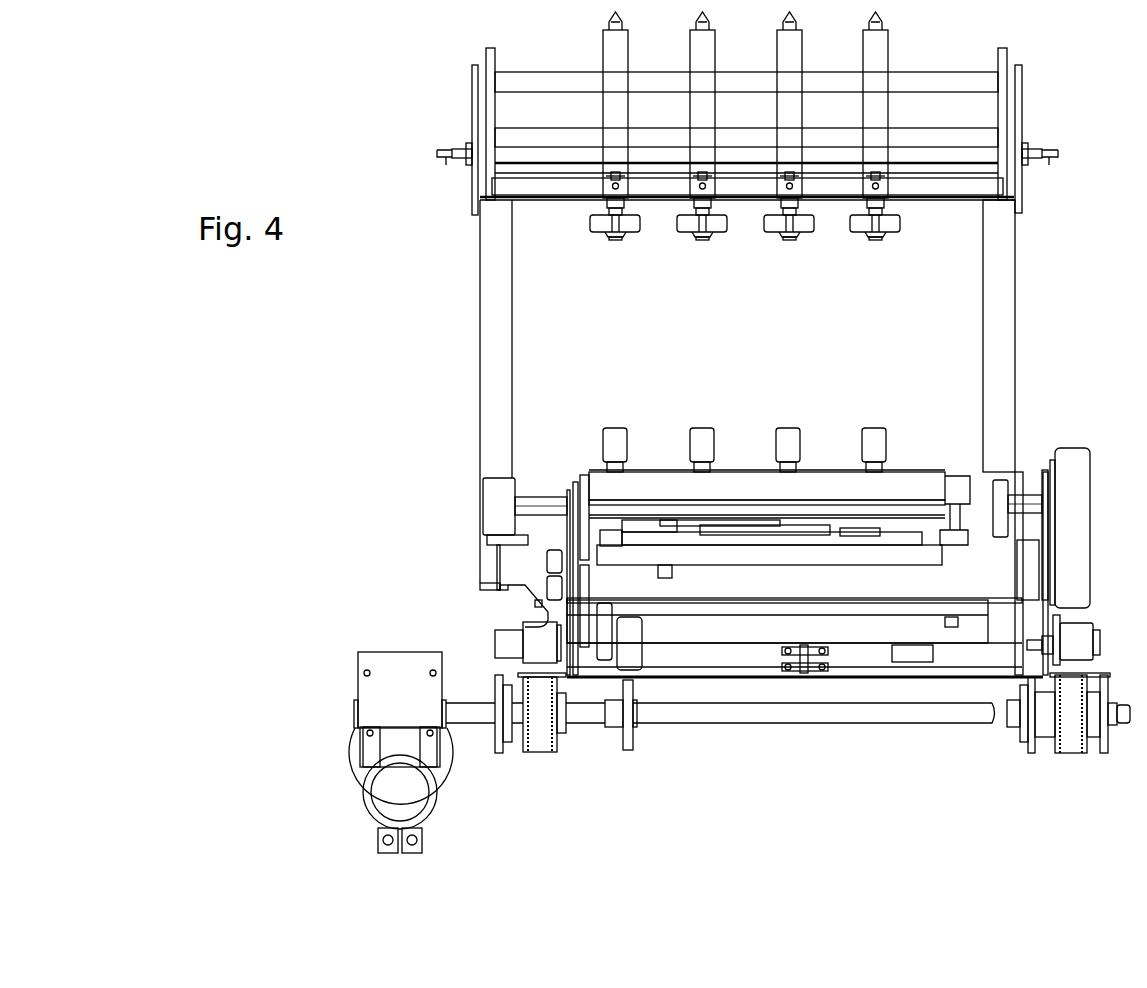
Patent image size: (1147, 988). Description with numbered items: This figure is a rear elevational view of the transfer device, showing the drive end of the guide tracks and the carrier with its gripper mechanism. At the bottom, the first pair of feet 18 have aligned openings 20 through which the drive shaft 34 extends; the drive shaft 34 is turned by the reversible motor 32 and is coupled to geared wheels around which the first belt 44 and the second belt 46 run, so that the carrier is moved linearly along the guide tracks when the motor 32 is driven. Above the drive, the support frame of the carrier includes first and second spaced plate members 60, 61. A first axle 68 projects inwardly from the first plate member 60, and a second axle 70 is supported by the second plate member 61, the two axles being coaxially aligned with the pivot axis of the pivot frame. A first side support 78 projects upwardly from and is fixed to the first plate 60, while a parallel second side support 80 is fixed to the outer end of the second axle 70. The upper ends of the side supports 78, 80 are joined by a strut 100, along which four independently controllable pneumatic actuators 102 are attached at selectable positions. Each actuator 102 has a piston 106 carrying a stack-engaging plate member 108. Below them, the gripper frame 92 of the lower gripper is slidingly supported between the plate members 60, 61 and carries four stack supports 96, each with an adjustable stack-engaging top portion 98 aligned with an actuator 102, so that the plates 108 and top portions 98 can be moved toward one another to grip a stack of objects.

The first pair of feet 18 is at (628, 750).
The aligned openings 20 is at (637, 725).
The motor 32 is at (348, 752).
The drive shaft 34 is at (808, 723).
The first belt 44 is at (1072, 745).
The second belt 46 is at (540, 745).
The first plate member 60 is at (1047, 613).
The second plate member 61 is at (572, 482).
The first axle 68 is at (1025, 505).
The second axle 70 is at (535, 495).
The first side support 78 is at (1008, 326).
The second side support 80 is at (490, 327).
The gripper frame 92 is at (832, 478).
The stack supports 96 is at (632, 470).
The stack-engaging top portion 98 is at (615, 428).
The strut 100 is at (993, 130).
The pneumatic actuators 102 is at (707, 47).
The piston 106 is at (590, 212).
The stack-engaging plate member 108 is at (630, 237).